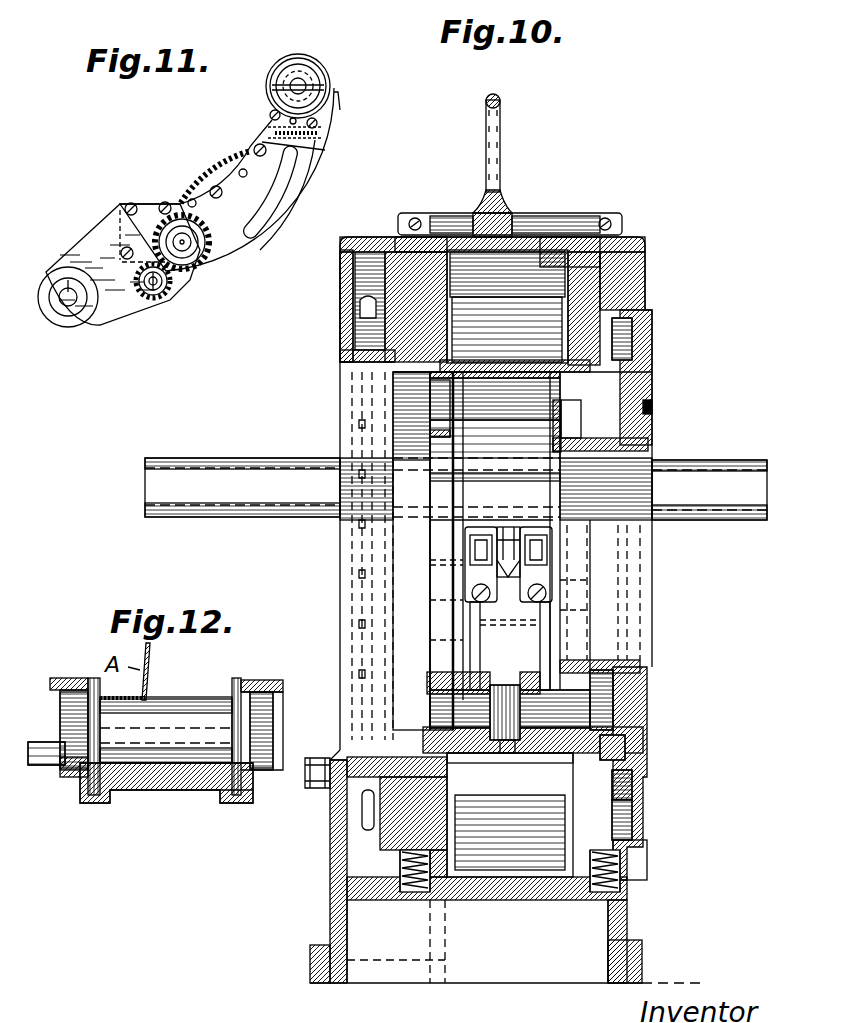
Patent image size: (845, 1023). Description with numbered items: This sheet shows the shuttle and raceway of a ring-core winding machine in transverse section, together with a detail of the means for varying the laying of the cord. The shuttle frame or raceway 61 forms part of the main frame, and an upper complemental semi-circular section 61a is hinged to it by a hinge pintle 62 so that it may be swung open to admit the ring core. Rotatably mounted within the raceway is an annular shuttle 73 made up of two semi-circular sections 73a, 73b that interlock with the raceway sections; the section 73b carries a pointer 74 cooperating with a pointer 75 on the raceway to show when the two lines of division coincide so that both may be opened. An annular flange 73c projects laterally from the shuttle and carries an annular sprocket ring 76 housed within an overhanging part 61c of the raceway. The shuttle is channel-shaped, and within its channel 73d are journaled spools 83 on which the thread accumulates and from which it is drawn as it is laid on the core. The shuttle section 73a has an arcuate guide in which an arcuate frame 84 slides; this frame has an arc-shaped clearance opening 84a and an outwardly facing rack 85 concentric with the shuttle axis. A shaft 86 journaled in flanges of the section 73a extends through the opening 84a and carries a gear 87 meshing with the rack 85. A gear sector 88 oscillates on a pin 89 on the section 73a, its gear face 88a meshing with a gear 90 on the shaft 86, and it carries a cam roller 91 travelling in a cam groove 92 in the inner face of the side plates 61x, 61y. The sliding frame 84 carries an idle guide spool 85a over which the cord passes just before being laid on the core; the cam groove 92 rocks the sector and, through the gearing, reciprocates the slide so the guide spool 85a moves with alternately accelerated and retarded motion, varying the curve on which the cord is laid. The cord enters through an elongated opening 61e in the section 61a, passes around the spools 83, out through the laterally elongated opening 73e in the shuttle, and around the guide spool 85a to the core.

In FIG. 10, the shuttle frame or raceway 61 is at (478, 880).
In FIG. 10, the upper complemental semi-circular section 61a is at (555, 250).
In FIG. 10, the overhanging part 61c is at (340, 322).
In FIG. 10, the elongated opening 61e is at (530, 225).
In FIG. 10, the side plate 61x is at (645, 840).
In FIG. 10, the side plate 61y is at (648, 272).
In FIG. 10, the hinge pintle 62 is at (292, 462).
In FIG. 10, the annular shuttle 73 is at (445, 555).
In FIG. 10, the shuttle section 73a is at (487, 755).
In FIG. 10, the shuttle section 73b is at (491, 410).
In FIG. 12, the shuttle section 73b is at (168, 800).
In FIG. 10, the annular flange 73c is at (412, 350).
In FIG. 12, the annular flange 73c is at (52, 768).
In FIG. 10, the channel 73d is at (507, 306).
In FIG. 10, the laterally elongated opening 73e is at (462, 524).
In FIG. 10, the pointer 74 is at (652, 445).
In FIG. 10, the pointer 75 is at (655, 410).
In FIG. 10, the annular sprocket ring 76 is at (367, 800).
In FIG. 10, the spools 83 is at (522, 372).
In FIG. 12, the spools 83 is at (200, 702).
In FIG. 10, the arcuate frame 84 is at (515, 745).
In FIG. 11, the arcuate frame 84 is at (250, 247).
In FIG. 10, the arc-shaped clearance opening 84a is at (470, 680).
In FIG. 11, the arc-shaped clearance opening 84a is at (280, 200).
In FIG. 11, the rack 85 is at (258, 186).
In FIG. 10, the idle guide spool 85a is at (508, 527).
In FIG. 11, the idle guide spool 85a is at (290, 62).
In FIG. 10, the shaft 86 is at (450, 712).
In FIG. 10, the gear 87 is at (507, 755).
In FIG. 10, the gear sector 88 is at (640, 805).
In FIG. 11, the gear sector 88 is at (98, 263).
In FIG. 11, the gear face 88a is at (126, 204).
In FIG. 11, the pin 89 is at (73, 310).
In FIG. 10, the gear 90 is at (615, 680).
In FIG. 11, the gear 90 is at (206, 230).
In FIG. 10, the cam roller 91 is at (628, 745).
In FIG. 11, the cam roller 91 is at (165, 298).
In FIG. 10, the cam groove 92 is at (622, 340).